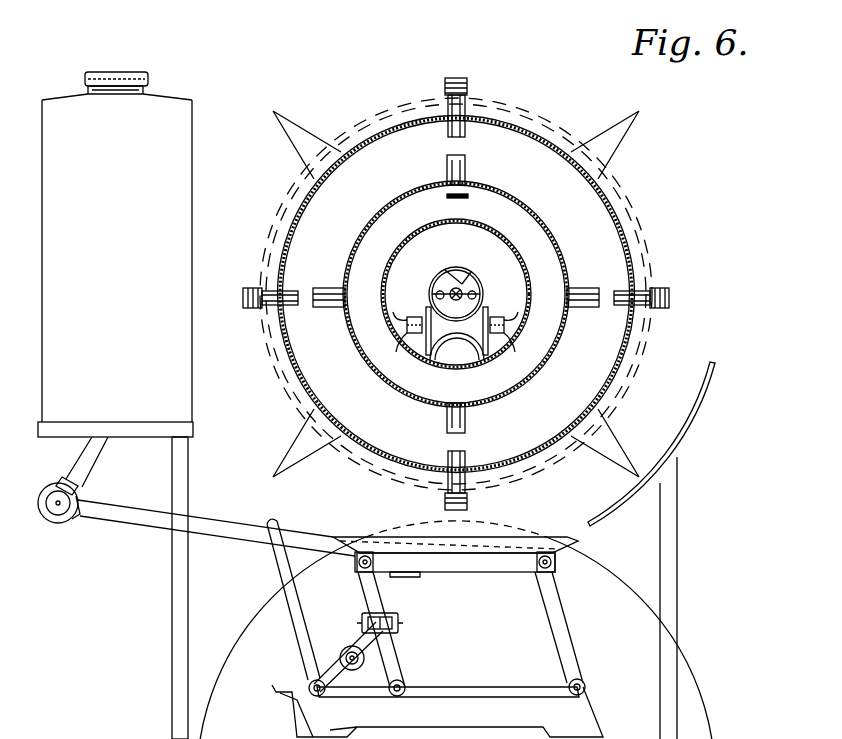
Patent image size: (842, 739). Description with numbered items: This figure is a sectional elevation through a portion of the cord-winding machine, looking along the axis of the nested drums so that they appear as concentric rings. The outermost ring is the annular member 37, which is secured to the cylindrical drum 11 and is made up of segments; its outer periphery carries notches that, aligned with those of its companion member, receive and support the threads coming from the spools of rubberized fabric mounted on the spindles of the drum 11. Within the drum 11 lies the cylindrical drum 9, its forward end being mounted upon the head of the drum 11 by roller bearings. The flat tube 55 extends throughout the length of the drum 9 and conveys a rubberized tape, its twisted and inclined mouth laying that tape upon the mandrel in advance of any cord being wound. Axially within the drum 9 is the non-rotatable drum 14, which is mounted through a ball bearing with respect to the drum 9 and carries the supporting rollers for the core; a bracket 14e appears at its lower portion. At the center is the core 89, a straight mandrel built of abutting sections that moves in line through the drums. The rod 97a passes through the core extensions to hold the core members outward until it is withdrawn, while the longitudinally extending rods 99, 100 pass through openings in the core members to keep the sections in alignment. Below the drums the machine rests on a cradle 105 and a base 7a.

The annular member 37 is at (551, 44).
The cylindrical drum 11 is at (391, 129).
The flat tube 55 is at (457, 206).
The cylindrical drum 9 is at (565, 268).
The drum 14 is at (515, 277).
The core 89 is at (455, 290).
The rod 97a is at (461, 289).
The longitudinally extending rod 100 is at (474, 291).
The longitudinally extending rod 99 is at (436, 295).
The bracket 14e is at (484, 307).
The inner fabric lining 105 is at (478, 545).
The base 7a is at (437, 711).